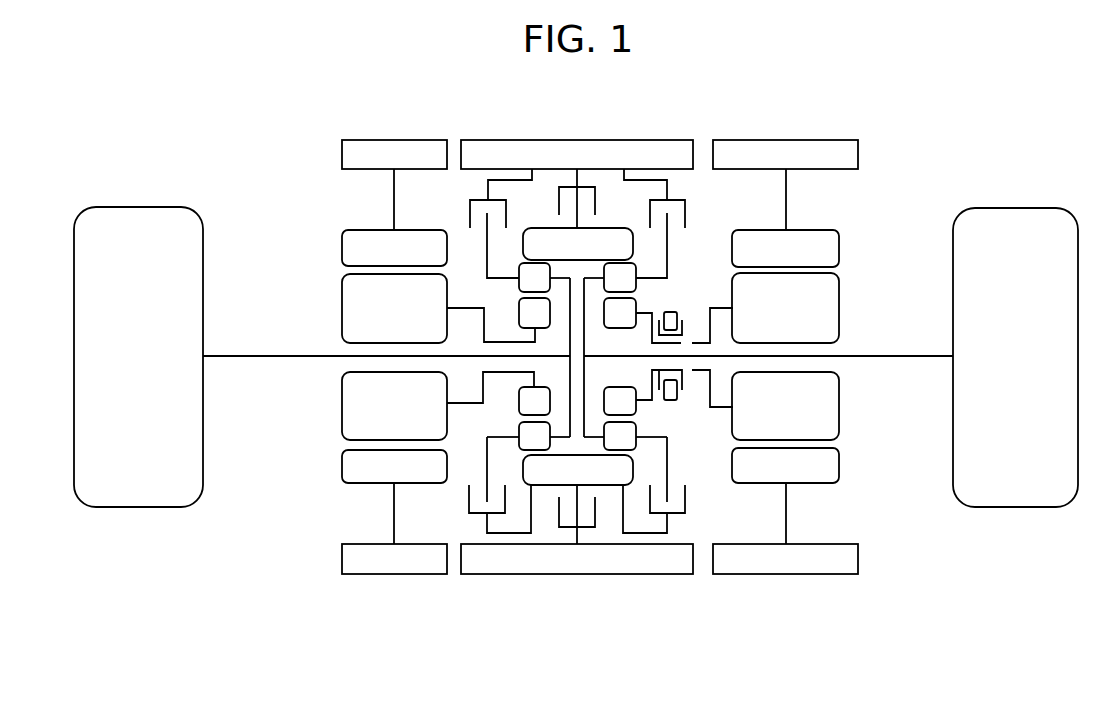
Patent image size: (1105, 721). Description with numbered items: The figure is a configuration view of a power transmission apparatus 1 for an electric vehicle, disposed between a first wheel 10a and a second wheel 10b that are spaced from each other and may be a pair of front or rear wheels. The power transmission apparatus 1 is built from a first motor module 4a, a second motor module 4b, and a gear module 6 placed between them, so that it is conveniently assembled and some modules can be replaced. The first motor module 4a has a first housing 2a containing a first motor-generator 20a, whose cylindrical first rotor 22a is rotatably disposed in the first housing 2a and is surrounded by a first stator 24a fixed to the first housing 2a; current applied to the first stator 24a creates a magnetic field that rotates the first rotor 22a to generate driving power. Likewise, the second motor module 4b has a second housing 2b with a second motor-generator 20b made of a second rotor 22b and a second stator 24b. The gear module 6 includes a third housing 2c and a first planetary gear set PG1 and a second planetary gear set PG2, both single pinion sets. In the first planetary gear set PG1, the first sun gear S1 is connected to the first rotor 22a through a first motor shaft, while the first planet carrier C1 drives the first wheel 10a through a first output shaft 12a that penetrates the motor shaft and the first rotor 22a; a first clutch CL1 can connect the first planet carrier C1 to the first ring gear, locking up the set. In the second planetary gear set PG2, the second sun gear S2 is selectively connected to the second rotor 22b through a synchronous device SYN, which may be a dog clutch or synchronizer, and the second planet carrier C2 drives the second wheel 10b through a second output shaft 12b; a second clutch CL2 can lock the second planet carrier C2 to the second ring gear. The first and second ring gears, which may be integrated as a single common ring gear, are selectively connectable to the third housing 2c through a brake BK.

The power transmission apparatus 1 is at (571, 91).
The first housing 2a is at (393, 140).
The second housing 2b is at (785, 139).
The third housing 2c is at (633, 140).
The first motor module 4a is at (400, 578).
The second motor module 4b is at (803, 578).
The gear module 6 is at (568, 578).
The first wheel 10a is at (137, 207).
The second wheel 10b is at (1014, 208).
The first output shaft 12a is at (244, 356).
The second output shaft 12b is at (918, 356).
The first motor-generator 20a is at (337, 228).
The second motor-generator 20b is at (842, 227).
The first rotor 22a is at (342, 405).
The second rotor 22b is at (839, 403).
The first stator 24a is at (342, 464).
The second stator 24b is at (839, 464).
The first clutch CL1 is at (480, 198).
The second clutch CL2 is at (672, 195).
The first planetary gear set PG1 is at (548, 523).
The second planetary gear set PG2 is at (635, 462).
The brake BK is at (588, 535).
The synchronous device SYN is at (683, 403).
The first planet carrier C1 is at (534, 356).
The first sun gear S1 is at (534, 356).
The second planet carrier C2 is at (620, 356).
The second sun gear S2 is at (620, 356).